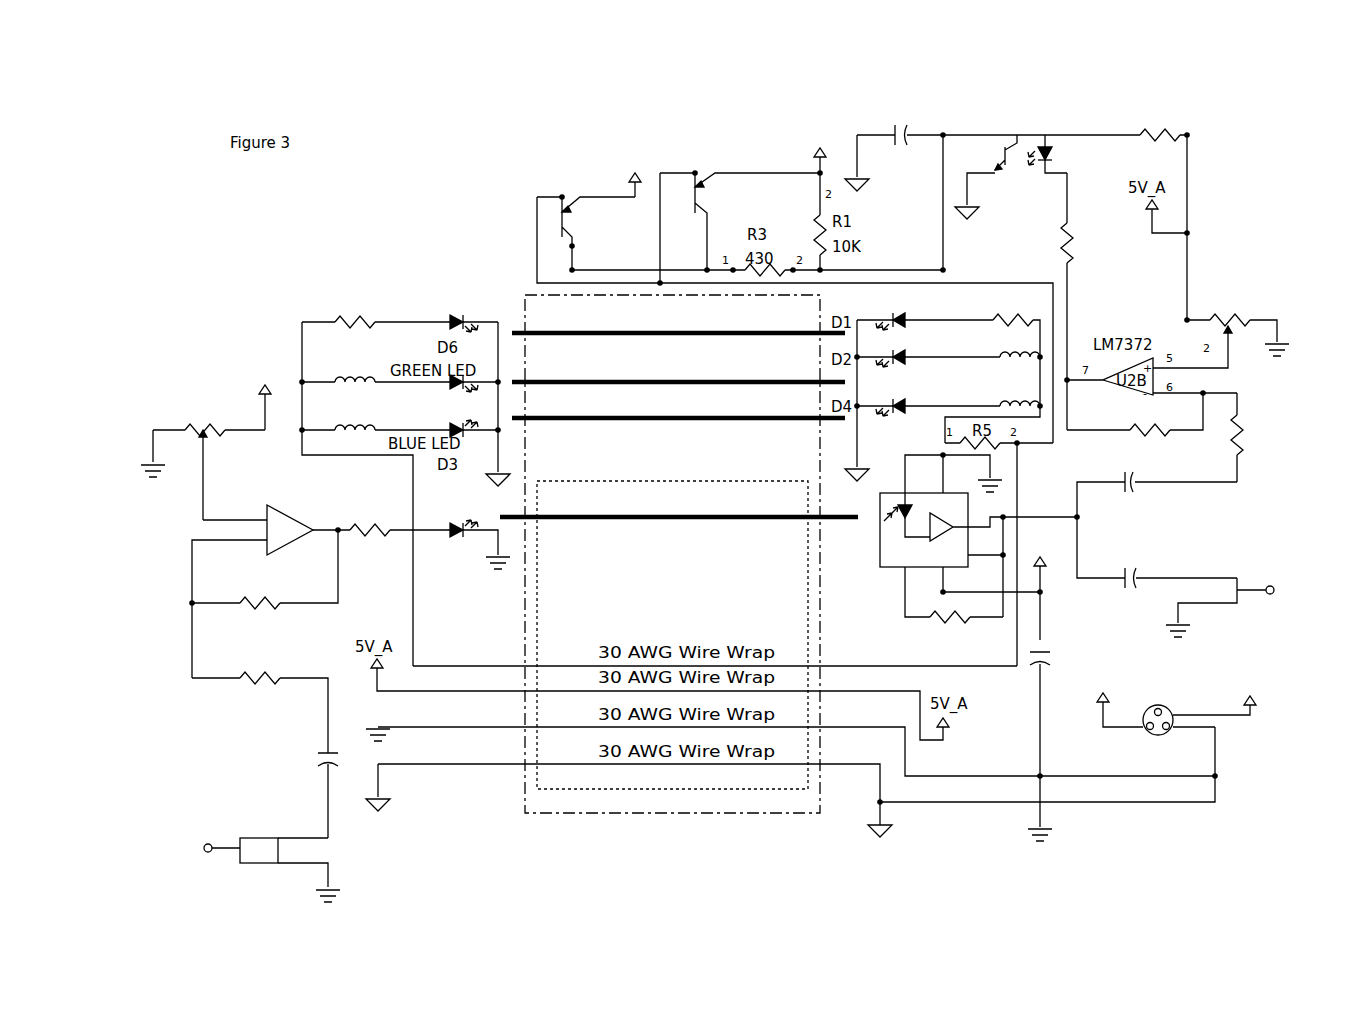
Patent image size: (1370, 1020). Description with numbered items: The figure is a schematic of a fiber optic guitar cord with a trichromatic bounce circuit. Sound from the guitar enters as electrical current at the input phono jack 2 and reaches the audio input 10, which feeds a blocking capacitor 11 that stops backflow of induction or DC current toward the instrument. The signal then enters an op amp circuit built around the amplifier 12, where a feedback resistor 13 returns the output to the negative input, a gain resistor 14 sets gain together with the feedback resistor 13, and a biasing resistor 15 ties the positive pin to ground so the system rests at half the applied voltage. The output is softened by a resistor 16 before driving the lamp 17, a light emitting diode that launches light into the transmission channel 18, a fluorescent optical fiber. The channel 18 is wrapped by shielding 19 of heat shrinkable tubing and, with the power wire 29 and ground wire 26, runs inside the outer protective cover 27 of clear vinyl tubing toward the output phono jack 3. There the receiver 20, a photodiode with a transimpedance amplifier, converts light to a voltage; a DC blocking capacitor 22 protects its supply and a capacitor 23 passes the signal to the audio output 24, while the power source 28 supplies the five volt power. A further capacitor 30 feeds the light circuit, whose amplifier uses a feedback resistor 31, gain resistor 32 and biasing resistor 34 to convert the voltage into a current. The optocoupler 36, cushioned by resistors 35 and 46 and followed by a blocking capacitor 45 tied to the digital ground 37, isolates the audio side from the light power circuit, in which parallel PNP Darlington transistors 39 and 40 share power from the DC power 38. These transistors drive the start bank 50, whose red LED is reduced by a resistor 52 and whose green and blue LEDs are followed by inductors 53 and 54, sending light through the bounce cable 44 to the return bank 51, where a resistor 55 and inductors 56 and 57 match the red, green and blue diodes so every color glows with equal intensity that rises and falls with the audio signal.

The input phono jack 2 is at (233, 922).
The output phono jack 3 is at (1245, 662).
The audio input 10 is at (180, 784).
The blocking capacitor 11 is at (263, 755).
The amplifier 12 is at (260, 530).
The feedback resistor 13 is at (243, 578).
The gain resistor 14 is at (243, 652).
The biasing resistor 15 is at (200, 378).
The resistor 16 is at (366, 541).
The lamp 17 is at (472, 569).
The transmission channel 18 is at (617, 530).
The shielding 19 is at (797, 802).
The receiver 20 is at (879, 582).
The DC blocking capacitor 22 is at (1035, 676).
The capacitor 23 is at (1145, 587).
The audio output 24 is at (1203, 527).
The ground wire 26 is at (1047, 781).
The outer protective cover 27 is at (820, 818).
The power source 28 is at (1175, 731).
The power wire 29 is at (257, 352).
The capacitor 30 is at (1145, 491).
The feedback resistor 31 is at (1153, 428).
The gain resistor 32 is at (1266, 422).
The biasing resistor 34 is at (1258, 296).
The resistor 35 is at (1110, 242).
The optocoupler 36 is at (1037, 140).
The digital ground 37 is at (920, 809).
The DC power 38 is at (1257, 704).
The Darlington transistor 39 is at (745, 158).
The Darlington transistor 40 is at (566, 188).
The bounce cable 44 is at (545, 327).
The blocking capacitor 45 is at (880, 96).
The resistor 46 is at (1185, 117).
The start bank 50 is at (963, 297).
The return bank 51 is at (440, 274).
The resistor 52 is at (1048, 326).
The inductor 53 is at (1048, 353).
The inductor 54 is at (1048, 398).
The resistor 55 is at (338, 302).
The inductor 56 is at (318, 358).
The inductor 57 is at (317, 408).